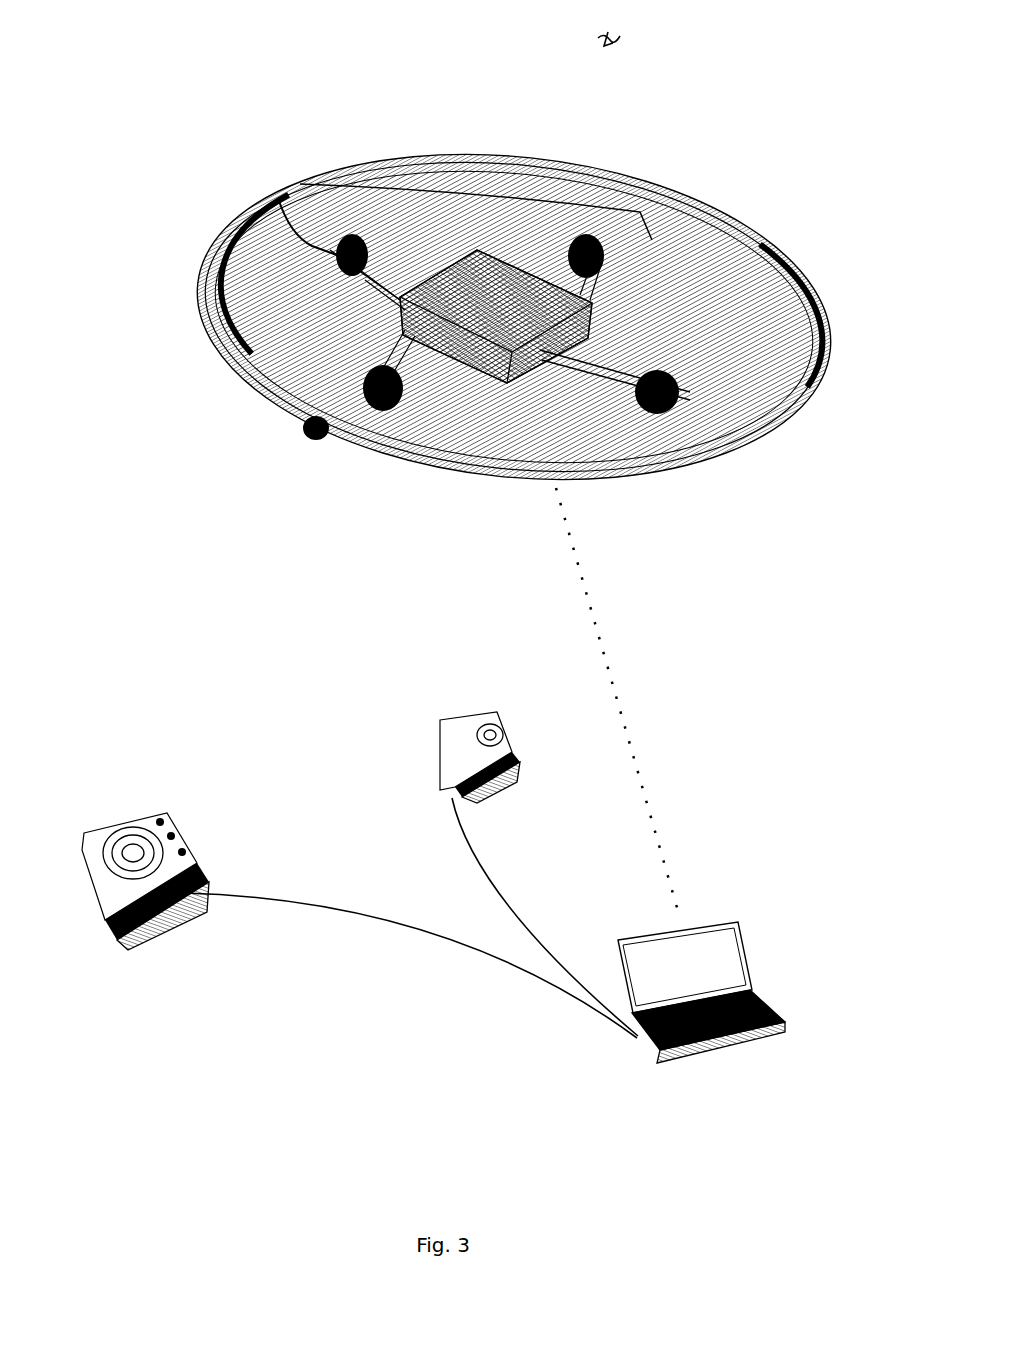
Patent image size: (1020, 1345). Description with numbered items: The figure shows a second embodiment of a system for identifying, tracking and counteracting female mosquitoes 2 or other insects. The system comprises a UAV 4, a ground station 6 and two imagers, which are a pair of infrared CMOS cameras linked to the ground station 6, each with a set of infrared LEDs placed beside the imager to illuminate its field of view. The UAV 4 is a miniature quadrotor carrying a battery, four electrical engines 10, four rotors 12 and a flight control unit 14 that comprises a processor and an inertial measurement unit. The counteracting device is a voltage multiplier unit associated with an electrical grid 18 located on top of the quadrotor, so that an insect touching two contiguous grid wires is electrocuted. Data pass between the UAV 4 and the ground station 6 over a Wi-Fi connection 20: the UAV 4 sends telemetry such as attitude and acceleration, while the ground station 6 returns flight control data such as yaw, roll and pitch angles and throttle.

The female mosquitoes 2 is at (618, 45).
The UAV 4 is at (498, 290).
The ground station 6 is at (752, 1036).
The electrical engines 10 is at (300, 420).
The rotors 12 is at (240, 367).
The flight control unit 14 is at (423, 156).
The electrical grid 18 is at (747, 240).
The Wi-Fi connection 20 is at (622, 690).